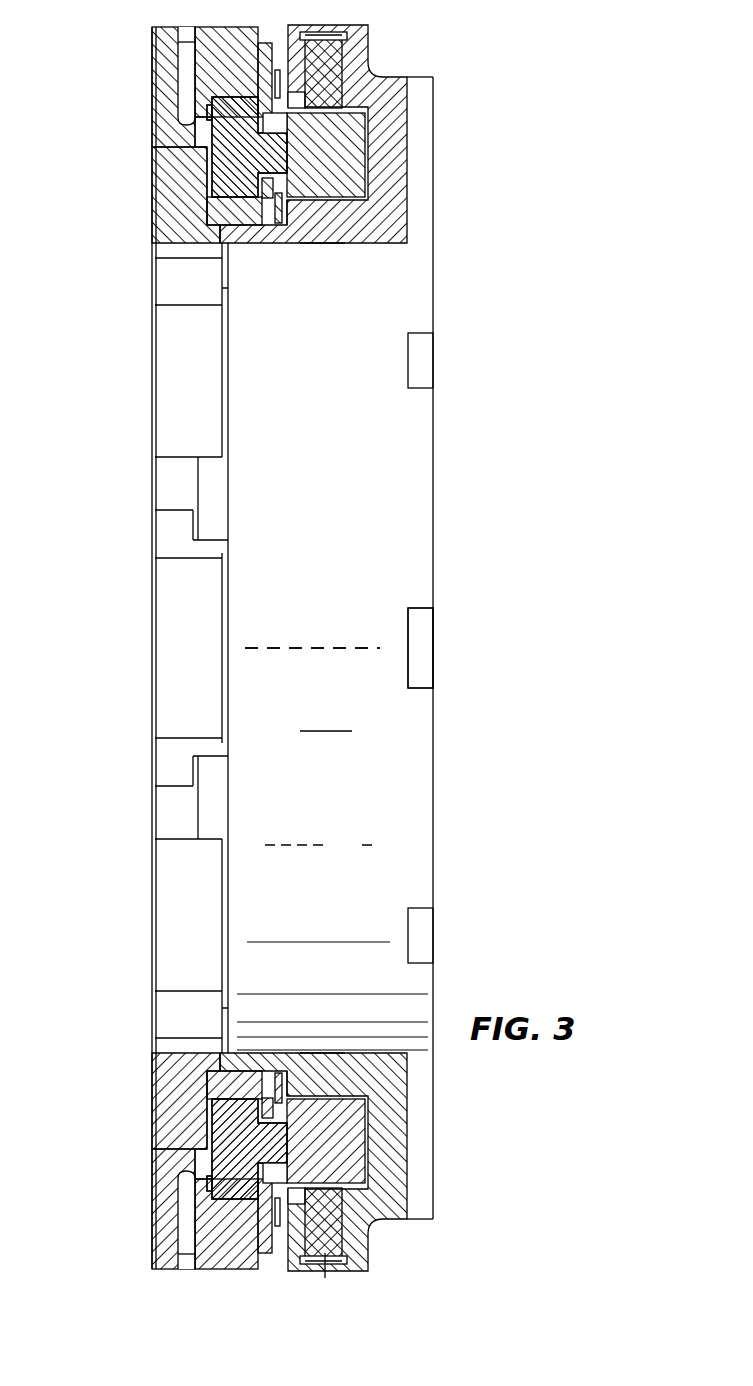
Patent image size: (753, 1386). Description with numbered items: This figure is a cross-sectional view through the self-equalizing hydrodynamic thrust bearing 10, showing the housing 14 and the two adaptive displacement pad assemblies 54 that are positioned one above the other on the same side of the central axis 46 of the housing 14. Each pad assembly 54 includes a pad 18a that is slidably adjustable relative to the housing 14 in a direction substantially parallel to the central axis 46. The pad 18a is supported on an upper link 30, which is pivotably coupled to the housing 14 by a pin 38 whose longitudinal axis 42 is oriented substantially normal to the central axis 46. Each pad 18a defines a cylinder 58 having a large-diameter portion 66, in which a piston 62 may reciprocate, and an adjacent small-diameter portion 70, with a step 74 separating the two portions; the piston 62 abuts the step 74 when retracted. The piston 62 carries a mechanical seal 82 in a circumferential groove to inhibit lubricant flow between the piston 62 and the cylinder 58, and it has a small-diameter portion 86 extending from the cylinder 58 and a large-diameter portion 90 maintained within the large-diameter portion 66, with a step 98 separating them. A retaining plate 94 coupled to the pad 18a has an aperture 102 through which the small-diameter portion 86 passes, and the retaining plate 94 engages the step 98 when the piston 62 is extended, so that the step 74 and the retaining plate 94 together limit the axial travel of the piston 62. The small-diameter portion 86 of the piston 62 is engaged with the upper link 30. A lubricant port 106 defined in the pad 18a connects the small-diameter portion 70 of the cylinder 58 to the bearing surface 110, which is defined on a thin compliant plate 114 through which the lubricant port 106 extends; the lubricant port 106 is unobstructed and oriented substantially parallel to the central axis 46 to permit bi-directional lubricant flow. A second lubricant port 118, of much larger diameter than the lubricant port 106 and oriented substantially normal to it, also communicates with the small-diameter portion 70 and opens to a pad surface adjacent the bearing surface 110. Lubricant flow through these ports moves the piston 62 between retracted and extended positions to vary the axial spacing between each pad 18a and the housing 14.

The self-equalizing hydrodynamic thrust bearing 10 is at (574, 68).
The housing 14 is at (395, 213).
The pad 18a is at (207, 182).
The upper link 30 is at (343, 153).
The pin 38 is at (330, 78).
The longitudinal axis 42 is at (330, 1275).
The central axis 46 is at (300, 652).
The adaptive displacement pad assembly 54 is at (122, 116).
The cylinder 58 is at (260, 100).
The piston 62 is at (222, 158).
The large-diameter portion of the cylinder 66 is at (262, 200).
The small-diameter portion of the cylinder 70 is at (227, 200).
The step 74 is at (232, 95).
The mechanical seal 82 is at (222, 215).
The small-diameter portion of the piston 86 is at (322, 228).
The large-diameter portion of the piston 90 is at (220, 207).
The retaining plate 94 is at (283, 205).
The step 98 is at (280, 222).
The aperture 102 is at (287, 135).
The lubricant port 106 is at (180, 146).
The bearing surface 110 is at (153, 90).
The compliant plate 114 is at (153, 163).
The second lubricant port 118 is at (190, 80).